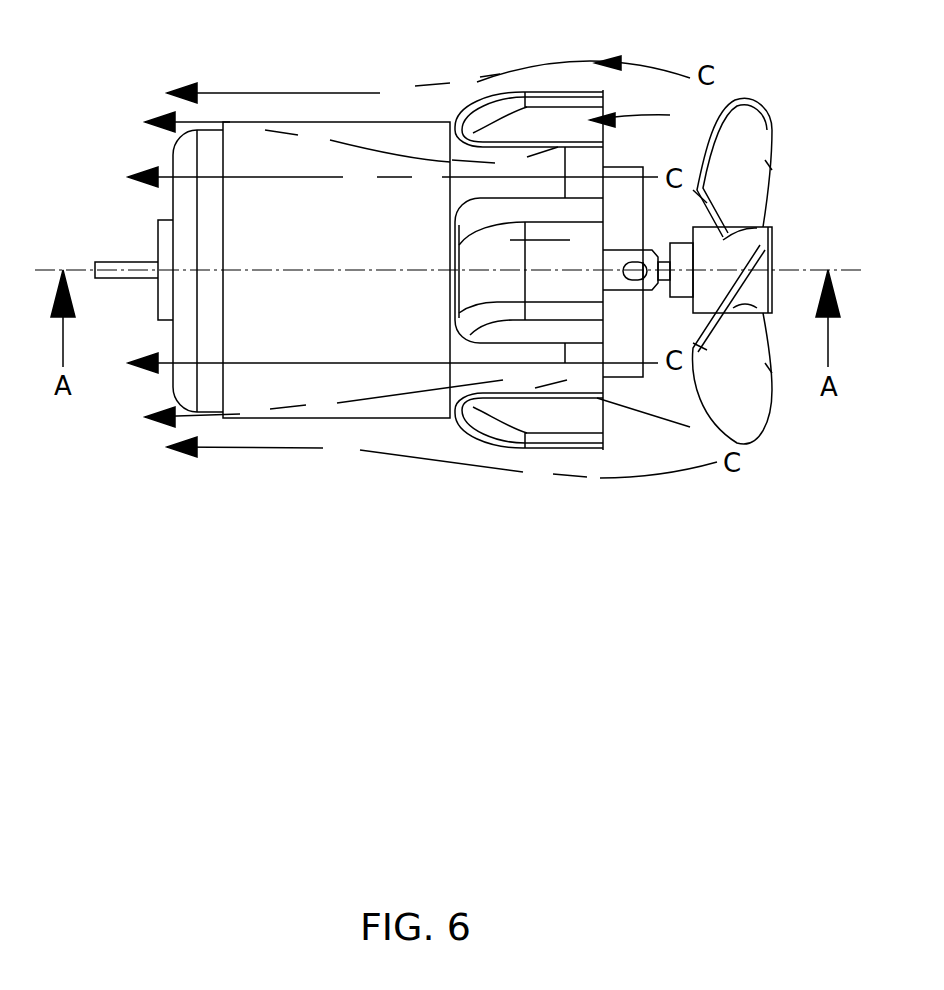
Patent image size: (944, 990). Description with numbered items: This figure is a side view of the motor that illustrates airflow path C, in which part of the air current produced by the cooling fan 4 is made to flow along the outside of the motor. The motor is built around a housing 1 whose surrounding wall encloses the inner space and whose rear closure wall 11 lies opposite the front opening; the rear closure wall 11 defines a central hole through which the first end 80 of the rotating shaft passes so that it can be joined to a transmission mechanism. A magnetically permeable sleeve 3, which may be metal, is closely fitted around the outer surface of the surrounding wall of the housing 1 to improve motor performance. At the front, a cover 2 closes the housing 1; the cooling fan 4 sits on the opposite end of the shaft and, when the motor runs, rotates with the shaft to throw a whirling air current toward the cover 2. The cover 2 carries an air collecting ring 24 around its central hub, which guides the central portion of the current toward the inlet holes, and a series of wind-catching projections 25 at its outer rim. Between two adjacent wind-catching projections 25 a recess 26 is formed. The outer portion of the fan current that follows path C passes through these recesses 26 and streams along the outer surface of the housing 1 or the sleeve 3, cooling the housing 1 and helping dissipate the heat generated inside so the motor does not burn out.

The housing 1 is at (642, 279).
The cover 2 is at (593, 383).
The magnetically permeable sleeve 3 is at (342, 412).
The cooling fan 4 is at (737, 427).
The rear closure wall 11 is at (173, 167).
The air collecting ring 24 is at (627, 368).
The wind-catching projections 25 is at (550, 104).
The recess 26 is at (588, 165).
The first end 80 is at (125, 263).